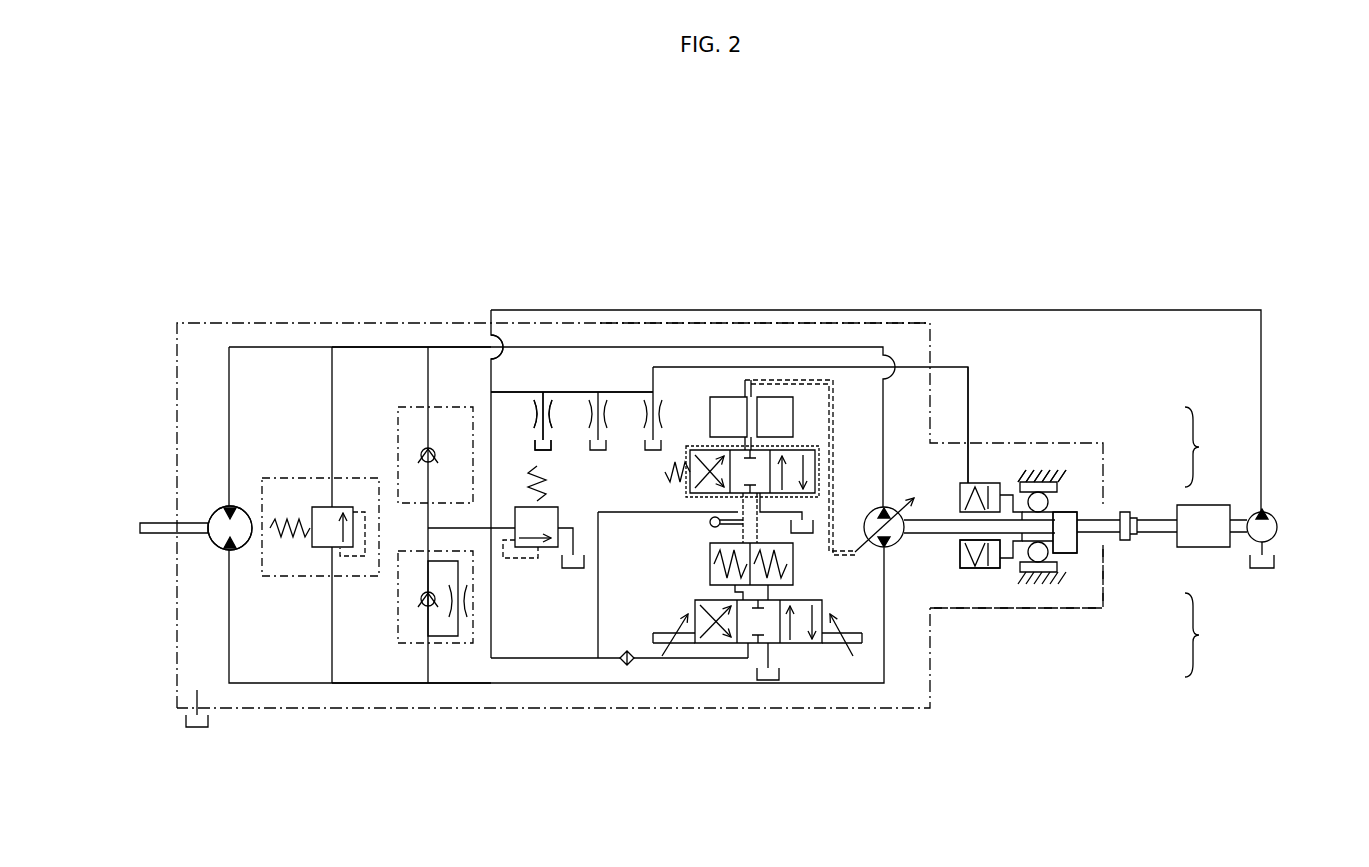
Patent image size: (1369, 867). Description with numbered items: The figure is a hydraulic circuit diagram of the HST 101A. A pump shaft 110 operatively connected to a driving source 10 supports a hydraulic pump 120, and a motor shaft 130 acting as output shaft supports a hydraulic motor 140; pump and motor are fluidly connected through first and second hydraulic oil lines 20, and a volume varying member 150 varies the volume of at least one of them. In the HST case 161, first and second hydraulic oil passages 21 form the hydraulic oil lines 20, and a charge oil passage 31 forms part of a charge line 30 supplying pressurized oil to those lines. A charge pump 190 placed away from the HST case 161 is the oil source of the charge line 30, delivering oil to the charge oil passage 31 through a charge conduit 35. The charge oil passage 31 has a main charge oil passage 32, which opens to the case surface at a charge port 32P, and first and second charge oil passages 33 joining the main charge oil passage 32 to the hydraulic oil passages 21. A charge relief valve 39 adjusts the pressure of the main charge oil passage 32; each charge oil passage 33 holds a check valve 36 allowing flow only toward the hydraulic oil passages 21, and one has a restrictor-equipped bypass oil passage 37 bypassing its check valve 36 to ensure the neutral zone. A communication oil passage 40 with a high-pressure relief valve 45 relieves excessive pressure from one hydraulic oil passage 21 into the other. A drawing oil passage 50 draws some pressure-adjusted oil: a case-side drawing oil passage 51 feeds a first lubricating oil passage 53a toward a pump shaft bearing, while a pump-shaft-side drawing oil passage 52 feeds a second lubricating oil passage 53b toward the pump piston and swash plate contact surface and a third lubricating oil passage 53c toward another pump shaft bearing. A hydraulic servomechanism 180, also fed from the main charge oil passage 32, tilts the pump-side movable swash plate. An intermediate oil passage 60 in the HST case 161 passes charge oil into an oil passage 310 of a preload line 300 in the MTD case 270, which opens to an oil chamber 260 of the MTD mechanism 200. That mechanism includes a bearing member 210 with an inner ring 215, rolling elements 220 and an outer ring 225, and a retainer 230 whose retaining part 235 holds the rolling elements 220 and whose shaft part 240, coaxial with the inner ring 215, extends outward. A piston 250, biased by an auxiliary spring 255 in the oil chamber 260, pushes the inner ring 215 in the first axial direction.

The HST 101A is at (905, 215).
The driving source 10 is at (1209, 512).
The first and second hydraulic oil lines 20 is at (449, 343).
The first and second hydraulic oil passages 21 is at (377, 345).
The charge line 30 is at (669, 304).
The charge oil passage 31 is at (501, 372).
The main charge oil passage 32 is at (490, 406).
The charge port 32P is at (491, 333).
The first and second charge oil passages 33 is at (427, 389).
The charge conduit 35 is at (967, 307).
The check valve 36 is at (421, 452).
The restrictor-equipped bypass oil passage 37 is at (459, 620).
The charge relief valve 39 is at (535, 549).
The communication oil passage 40 is at (331, 389).
The high-pressure relief valve 45 is at (322, 507).
The drawing oil passage 50 is at (589, 377).
The case-side drawing oil passage 51 is at (557, 390).
The pump-shaft-side drawing oil passage 52 is at (574, 340).
The first lubricating oil passage 53a is at (538, 436).
The second lubricating oil passage 53b is at (593, 436).
The third lubricating oil passage 53c is at (648, 436).
The intermediate oil passage 60 is at (908, 365).
The pump shaft 110 is at (920, 534).
The hydraulic pump 120 is at (891, 554).
The motor shaft 130 is at (157, 525).
The hydraulic motor 140 is at (212, 504).
The volume varying member 150 is at (898, 505).
The HST case 161 is at (806, 320).
The hydraulic servomechanism 180 is at (730, 387).
The charge pump 190 is at (1278, 522).
The MTD mechanism 200 is at (1064, 466).
The bearing member 210 is at (1212, 447).
The inner ring 215 is at (1063, 522).
The rolling elements 220 is at (1048, 500).
The outer ring 225 is at (1050, 483).
The retainer 230 is at (1213, 635).
The retaining part 235 is at (1062, 553).
The shaft part 240 is at (1110, 532).
The piston 250 is at (990, 570).
The auxiliary spring 255 is at (962, 490).
The oil chamber 260 is at (967, 570).
The MTD case 270 is at (1060, 612).
The preload line 300 is at (1024, 423).
The oil passage 310 is at (970, 472).